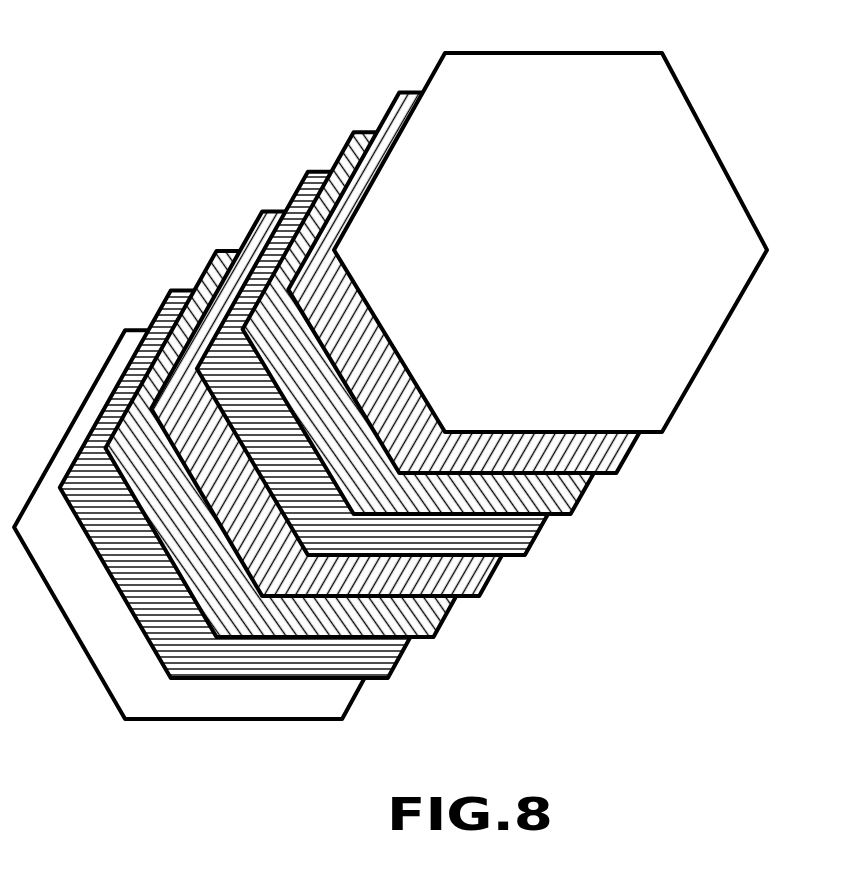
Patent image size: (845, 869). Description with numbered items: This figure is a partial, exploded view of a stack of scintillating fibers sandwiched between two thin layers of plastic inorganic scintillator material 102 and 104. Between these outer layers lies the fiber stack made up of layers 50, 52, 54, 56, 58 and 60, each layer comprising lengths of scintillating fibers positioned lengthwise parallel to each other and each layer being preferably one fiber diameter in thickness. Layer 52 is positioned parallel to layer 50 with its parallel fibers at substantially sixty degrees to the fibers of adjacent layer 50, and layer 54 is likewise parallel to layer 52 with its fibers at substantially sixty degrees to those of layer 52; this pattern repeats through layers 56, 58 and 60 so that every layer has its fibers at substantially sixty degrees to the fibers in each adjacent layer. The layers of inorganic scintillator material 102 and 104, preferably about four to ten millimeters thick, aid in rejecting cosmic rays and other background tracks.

The layer of inorganic scintillator material 102 is at (704, 170).
The layer of lengthwise parallel fibers 50 is at (626, 456).
The layer of lengthwise parallel fibers 52 is at (585, 489).
The layer of lengthwise parallel fibers 54 is at (538, 534).
The layer of lengthwise parallel fibers 56 is at (490, 578).
The layer of lengthwise parallel fibers 58 is at (442, 622).
The layer of lengthwise parallel fibers 60 is at (394, 668).
The layer of inorganic scintillator material 104 is at (143, 708).